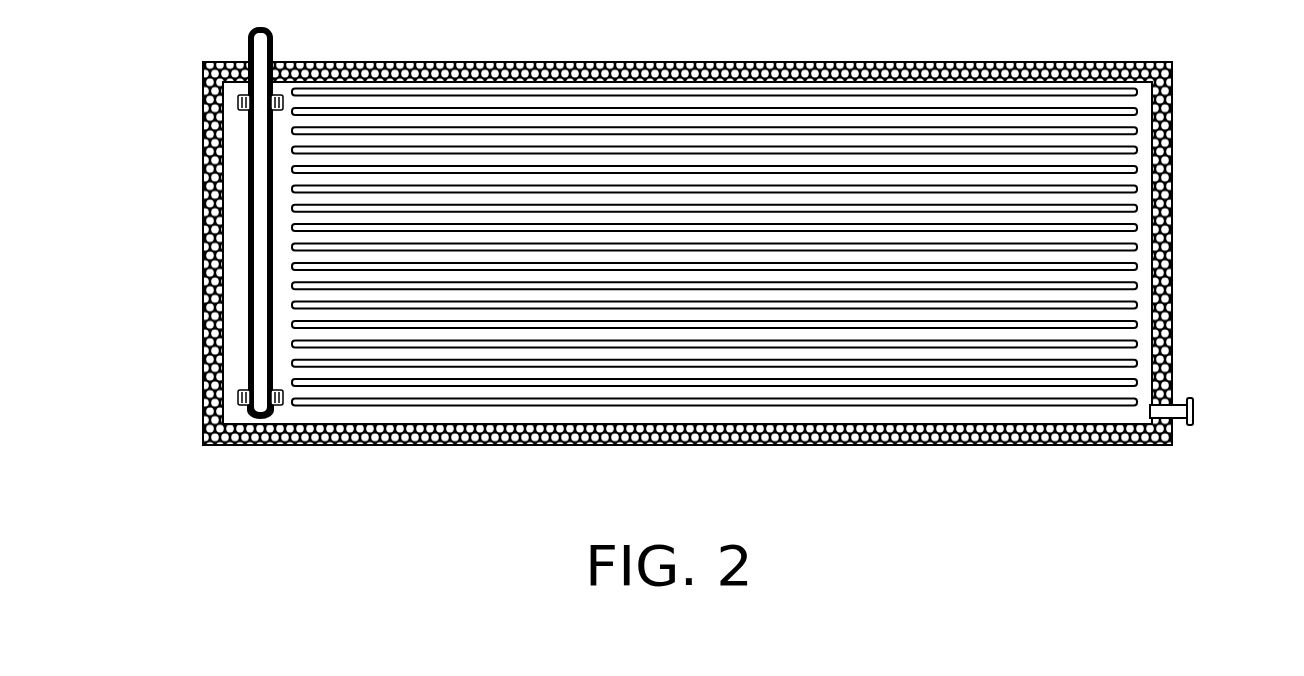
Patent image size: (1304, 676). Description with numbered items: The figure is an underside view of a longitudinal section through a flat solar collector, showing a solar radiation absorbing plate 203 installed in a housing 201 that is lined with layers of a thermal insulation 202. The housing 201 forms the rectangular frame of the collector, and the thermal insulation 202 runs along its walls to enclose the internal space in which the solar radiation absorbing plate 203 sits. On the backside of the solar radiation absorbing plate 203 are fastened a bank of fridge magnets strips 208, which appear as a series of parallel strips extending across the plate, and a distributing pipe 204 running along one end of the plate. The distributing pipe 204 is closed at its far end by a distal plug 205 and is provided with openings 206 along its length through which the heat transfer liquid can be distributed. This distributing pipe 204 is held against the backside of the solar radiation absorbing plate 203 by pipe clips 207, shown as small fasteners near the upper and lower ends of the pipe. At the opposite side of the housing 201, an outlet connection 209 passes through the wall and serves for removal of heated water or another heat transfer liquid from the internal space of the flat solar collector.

The housing 201 is at (1172, 307).
The thermal insulation 202 is at (1093, 62).
The solar radiation absorbing plate 203 is at (238, 292).
The distributing pipe 204 is at (250, 332).
The distal plug 205 is at (265, 423).
The openings 206 is at (272, 135).
The pipe clips 207 is at (240, 102).
The bank of fridge magnets strips 208 is at (502, 90).
The outlet connection 209 is at (1192, 423).